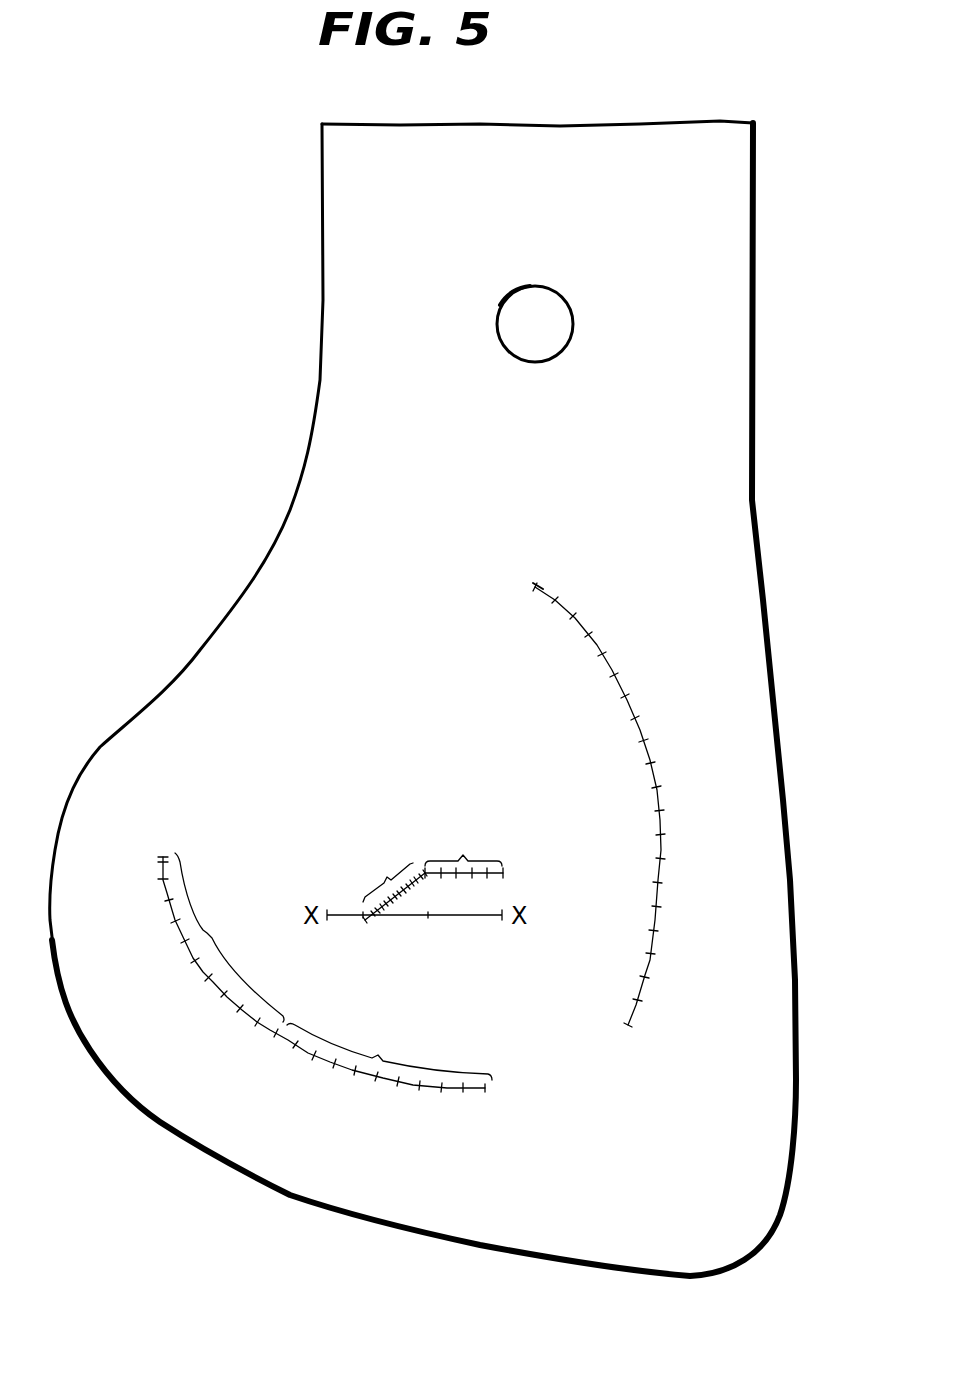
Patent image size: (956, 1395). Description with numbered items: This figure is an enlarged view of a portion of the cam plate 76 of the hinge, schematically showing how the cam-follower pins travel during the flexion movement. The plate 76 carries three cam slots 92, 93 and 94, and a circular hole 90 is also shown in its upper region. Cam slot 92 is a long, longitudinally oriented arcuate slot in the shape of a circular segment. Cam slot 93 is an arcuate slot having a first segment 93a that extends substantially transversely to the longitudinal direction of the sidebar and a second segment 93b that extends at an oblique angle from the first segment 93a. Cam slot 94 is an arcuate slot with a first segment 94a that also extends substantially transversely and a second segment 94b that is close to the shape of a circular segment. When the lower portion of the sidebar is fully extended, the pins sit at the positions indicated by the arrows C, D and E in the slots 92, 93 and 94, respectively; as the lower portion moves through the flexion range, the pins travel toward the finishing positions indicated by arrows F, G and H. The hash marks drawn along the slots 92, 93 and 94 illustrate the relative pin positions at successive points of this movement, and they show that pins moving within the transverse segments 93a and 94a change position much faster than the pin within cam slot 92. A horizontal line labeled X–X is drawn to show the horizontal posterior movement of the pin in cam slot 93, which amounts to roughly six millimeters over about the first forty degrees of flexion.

The plate 76 is at (338, 217).
The hole 90 is at (511, 312).
The cam slot 92 is at (637, 717).
The cam slot 93 is at (500, 836).
The first segment 93a is at (463, 844).
The second segment 93b is at (371, 874).
The cam slot 94 is at (275, 1045).
The first segment 94a is at (389, 1052).
The second segment 94b is at (229, 937).
The arrow C is at (535, 572).
The arrow D is at (508, 873).
The arrow E is at (486, 1097).
The arrow F is at (628, 1036).
The arrow G is at (354, 933).
The arrow H is at (163, 845).